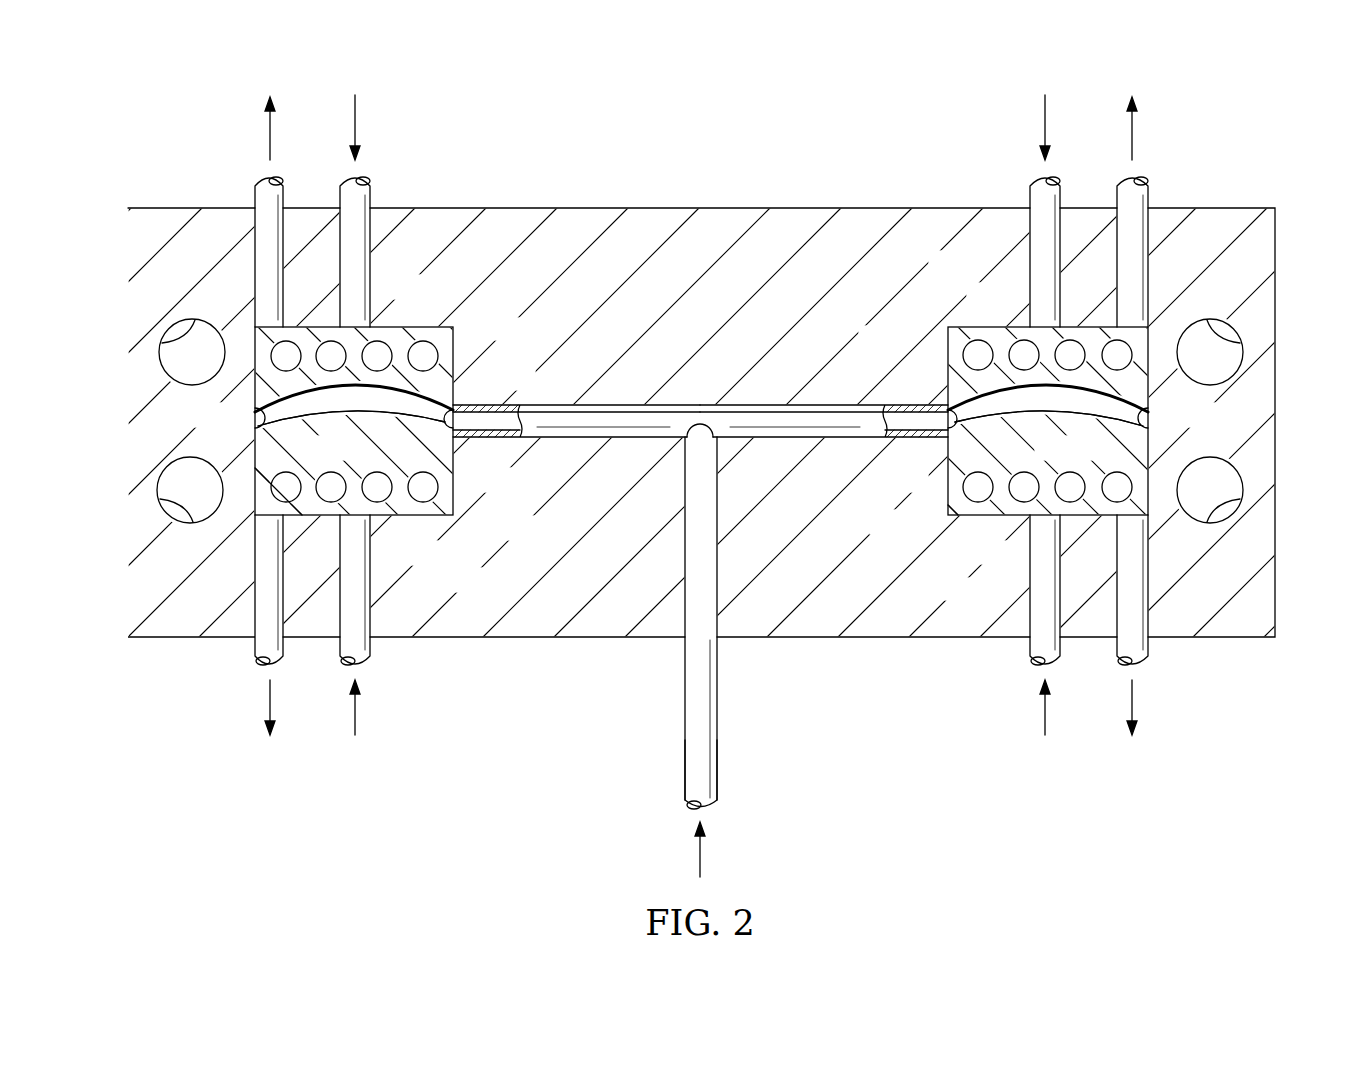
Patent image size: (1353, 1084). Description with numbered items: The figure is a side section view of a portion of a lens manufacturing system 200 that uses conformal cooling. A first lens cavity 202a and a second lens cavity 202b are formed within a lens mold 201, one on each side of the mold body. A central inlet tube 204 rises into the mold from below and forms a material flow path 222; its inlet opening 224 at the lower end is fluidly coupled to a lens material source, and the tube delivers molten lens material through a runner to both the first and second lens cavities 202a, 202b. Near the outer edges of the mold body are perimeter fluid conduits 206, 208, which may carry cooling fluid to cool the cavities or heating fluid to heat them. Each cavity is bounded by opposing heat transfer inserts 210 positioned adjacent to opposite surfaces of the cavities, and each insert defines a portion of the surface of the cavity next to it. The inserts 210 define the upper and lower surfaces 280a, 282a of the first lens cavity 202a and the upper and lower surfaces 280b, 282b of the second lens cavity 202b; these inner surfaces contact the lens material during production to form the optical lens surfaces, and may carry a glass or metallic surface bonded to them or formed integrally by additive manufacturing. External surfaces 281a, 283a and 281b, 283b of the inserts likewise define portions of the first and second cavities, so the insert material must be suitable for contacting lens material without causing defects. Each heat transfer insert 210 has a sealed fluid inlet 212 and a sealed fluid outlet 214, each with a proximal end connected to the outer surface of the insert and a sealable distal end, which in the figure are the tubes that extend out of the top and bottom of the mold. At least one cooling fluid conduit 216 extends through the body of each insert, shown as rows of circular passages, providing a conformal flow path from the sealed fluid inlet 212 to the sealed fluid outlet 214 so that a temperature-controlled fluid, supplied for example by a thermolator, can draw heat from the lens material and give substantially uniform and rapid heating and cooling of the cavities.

The lens manufacturing system 200 is at (801, 117).
The lens mold 201 is at (165, 215).
The first lens cavity 202a is at (457, 448).
The second lens cavity 202b is at (948, 450).
The inlet tube 204 is at (718, 792).
The perimeter fluid conduit 206 is at (165, 497).
The perimeter fluid conduit 208 is at (165, 345).
The heat transfer insert 210 is at (452, 372).
The sealed fluid inlet 212 is at (357, 177).
The sealed fluid outlet 214 is at (264, 177).
The cooling fluid conduit 216 is at (452, 352).
The material flow path 222 is at (718, 692).
The inlet opening 224 is at (692, 812).
The upper surface of first lens cavity 280a is at (257, 417).
The upper surface of second lens cavity 280b is at (1143, 417).
The external surface of heat transfer insert 281a is at (394, 386).
The external surface of heat transfer insert 281b is at (995, 388).
The lower surface of first lens cavity 282a is at (292, 413).
The lower surface of second lens cavity 282b is at (1110, 412).
The external surface of heat transfer insert 283a is at (400, 500).
The external surface of heat transfer insert 283b is at (985, 498).